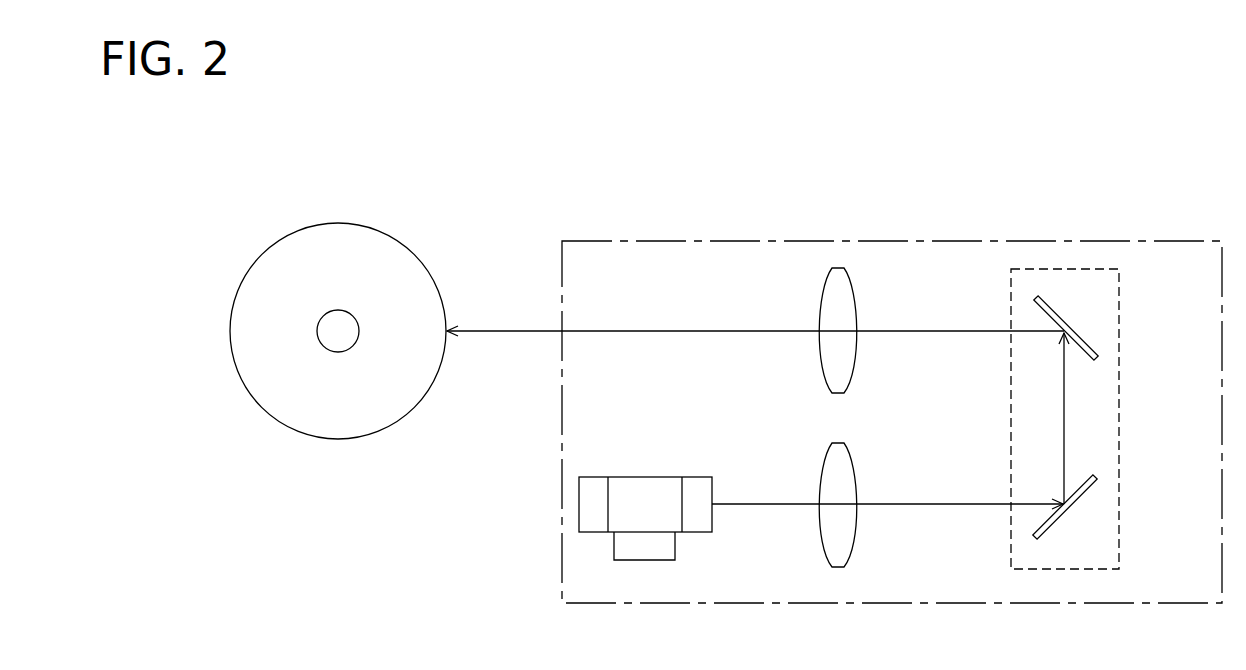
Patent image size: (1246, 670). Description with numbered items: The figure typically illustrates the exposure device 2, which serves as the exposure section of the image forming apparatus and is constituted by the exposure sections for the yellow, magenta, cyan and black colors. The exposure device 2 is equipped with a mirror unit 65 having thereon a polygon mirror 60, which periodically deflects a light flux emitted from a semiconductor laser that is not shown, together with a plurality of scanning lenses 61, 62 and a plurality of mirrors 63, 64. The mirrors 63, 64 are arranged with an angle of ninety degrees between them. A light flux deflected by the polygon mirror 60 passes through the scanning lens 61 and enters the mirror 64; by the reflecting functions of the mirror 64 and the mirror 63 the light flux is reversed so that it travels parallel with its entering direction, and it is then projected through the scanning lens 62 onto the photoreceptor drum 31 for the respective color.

The exposure device 2 is at (958, 239).
The photoreceptor drum 31 is at (328, 222).
The polygon mirror 60 is at (648, 477).
The scanning lens 61 is at (857, 471).
The scanning lens 62 is at (855, 288).
The mirror 63 is at (1075, 330).
The mirror 64 is at (1078, 502).
The mirror unit 65 is at (1076, 267).